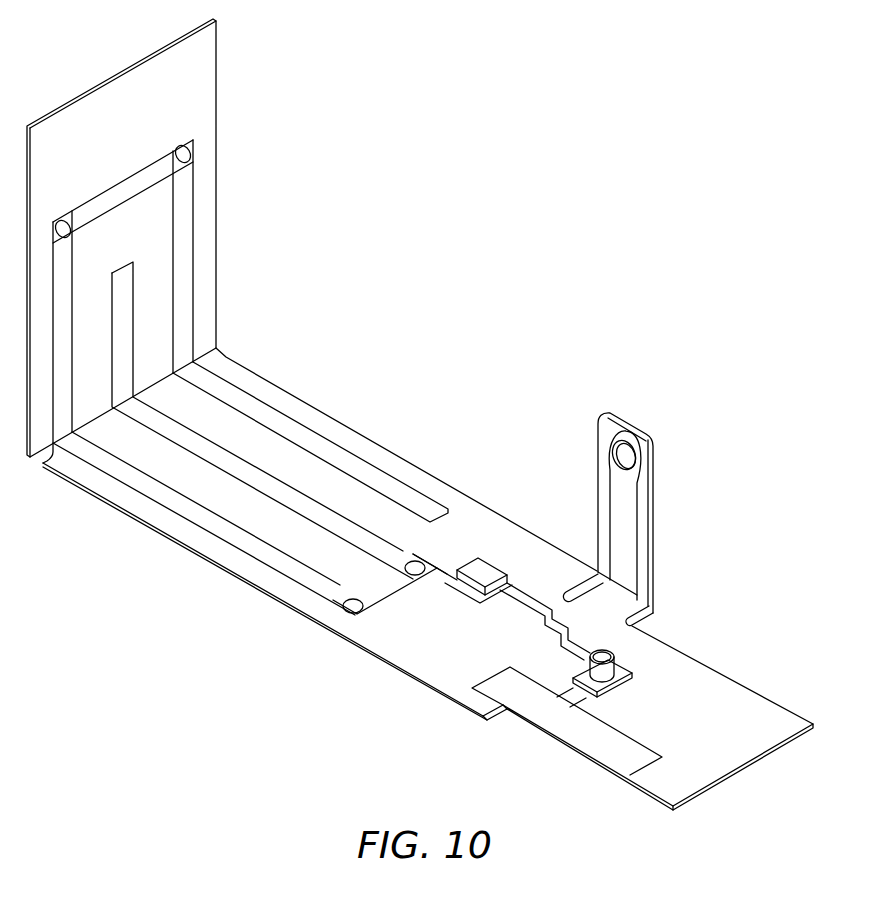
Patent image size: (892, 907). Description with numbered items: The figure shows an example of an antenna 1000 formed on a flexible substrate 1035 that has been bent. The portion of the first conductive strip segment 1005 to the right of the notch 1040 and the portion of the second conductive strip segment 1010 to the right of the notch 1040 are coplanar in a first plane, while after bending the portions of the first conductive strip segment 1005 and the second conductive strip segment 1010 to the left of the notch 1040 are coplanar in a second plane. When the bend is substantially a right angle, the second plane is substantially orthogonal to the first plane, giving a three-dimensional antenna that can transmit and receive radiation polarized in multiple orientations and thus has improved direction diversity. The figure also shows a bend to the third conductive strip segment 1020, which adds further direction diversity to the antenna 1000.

The antenna 1000 is at (580, 185).
The first conductive strip segment 1005 is at (377, 480).
The second conductive strip segment 1010 is at (243, 472).
The third conductive strip segment 1020 is at (656, 535).
The flexible substrate 1035 is at (218, 184).
The notch 1040 is at (222, 354).